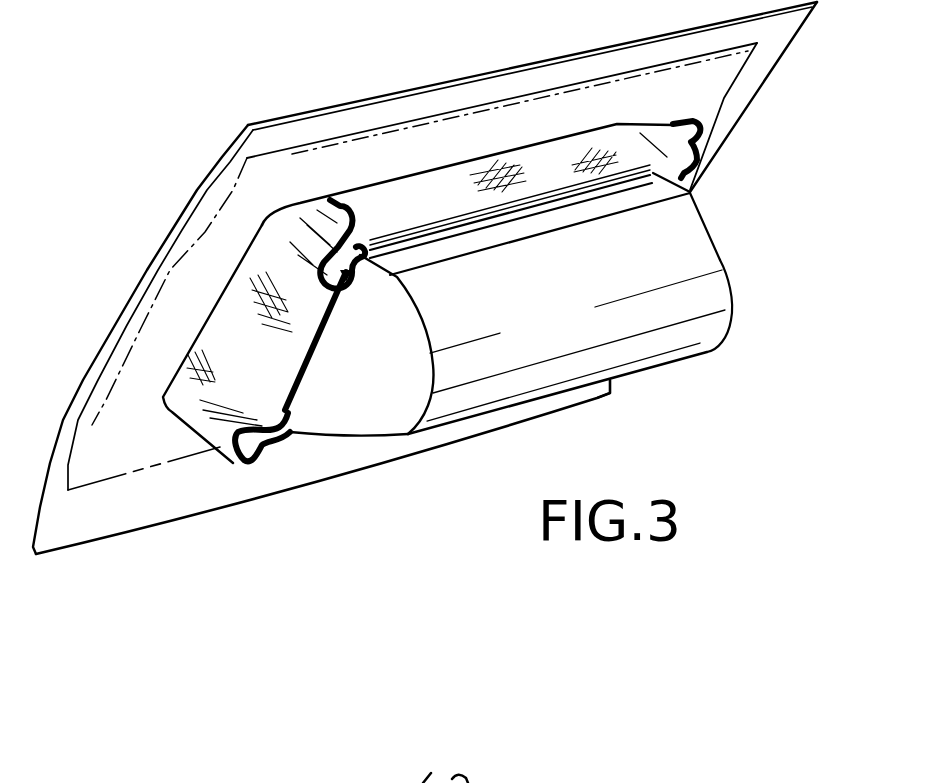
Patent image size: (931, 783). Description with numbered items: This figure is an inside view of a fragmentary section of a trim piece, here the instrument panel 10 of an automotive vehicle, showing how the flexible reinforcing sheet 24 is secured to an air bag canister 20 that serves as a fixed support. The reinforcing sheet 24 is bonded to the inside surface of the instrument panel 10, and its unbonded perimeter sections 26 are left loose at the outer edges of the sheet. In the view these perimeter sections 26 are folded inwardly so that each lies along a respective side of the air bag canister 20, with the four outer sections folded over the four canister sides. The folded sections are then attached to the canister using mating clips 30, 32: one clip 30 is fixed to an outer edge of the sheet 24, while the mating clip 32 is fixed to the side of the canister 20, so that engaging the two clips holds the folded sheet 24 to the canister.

The instrument panel 10 is at (755, 95).
The air bag canister 20 is at (720, 262).
The flexible reinforcing sheet 24 is at (233, 118).
The unbonded perimeter sections 26 is at (167, 308).
The mating clip 30 is at (392, 272).
The mating clip 32 is at (308, 372).